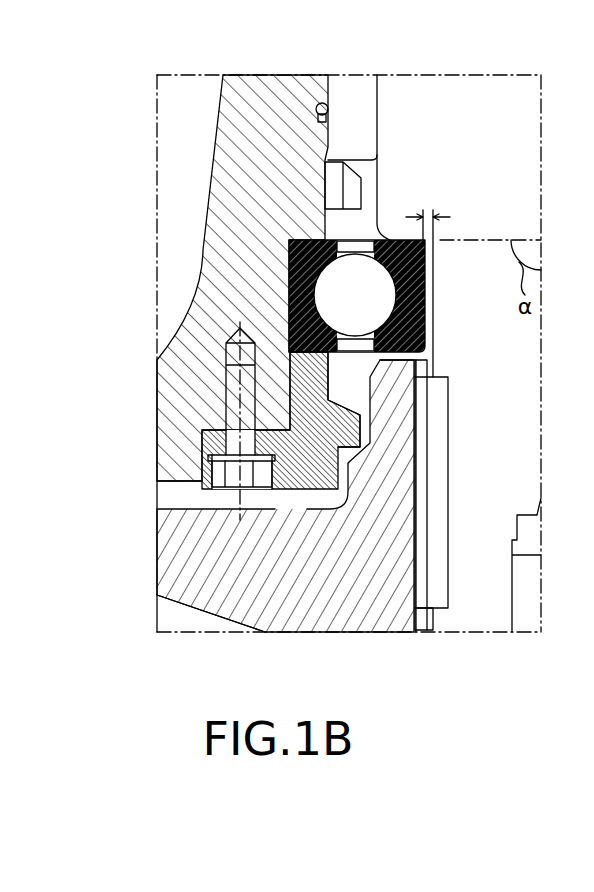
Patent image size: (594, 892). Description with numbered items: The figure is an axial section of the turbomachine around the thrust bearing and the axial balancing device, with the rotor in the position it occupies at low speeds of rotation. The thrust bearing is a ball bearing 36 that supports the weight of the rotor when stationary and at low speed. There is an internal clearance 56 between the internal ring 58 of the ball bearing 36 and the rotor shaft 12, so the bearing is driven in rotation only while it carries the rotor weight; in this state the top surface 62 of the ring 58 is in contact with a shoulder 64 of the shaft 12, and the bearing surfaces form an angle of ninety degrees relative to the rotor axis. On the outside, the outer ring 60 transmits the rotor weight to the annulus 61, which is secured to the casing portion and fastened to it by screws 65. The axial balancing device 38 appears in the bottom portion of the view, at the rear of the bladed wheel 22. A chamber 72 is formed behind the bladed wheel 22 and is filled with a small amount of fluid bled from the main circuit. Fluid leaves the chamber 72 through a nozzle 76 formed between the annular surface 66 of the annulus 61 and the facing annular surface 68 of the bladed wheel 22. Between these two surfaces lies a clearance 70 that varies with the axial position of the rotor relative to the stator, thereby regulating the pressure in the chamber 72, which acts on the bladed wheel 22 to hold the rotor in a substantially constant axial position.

The rotor shaft 12 is at (502, 137).
The bladed wheel 22 is at (228, 585).
The ball bearing 36 is at (425, 328).
The axial balancing device 38 is at (158, 541).
The internal clearance 56 is at (440, 283).
The internal ring 58 is at (425, 303).
The outer ring 60 is at (289, 262).
The annulus 61 is at (330, 402).
The top surface 62 is at (397, 240).
The shoulder 64 is at (427, 252).
The screws 65 is at (237, 389).
The annular surface 66 is at (355, 482).
The annular surface 68 is at (350, 460).
The clearance 70 is at (281, 433).
The chamber 72 is at (177, 495).
The nozzle 76 is at (350, 450).